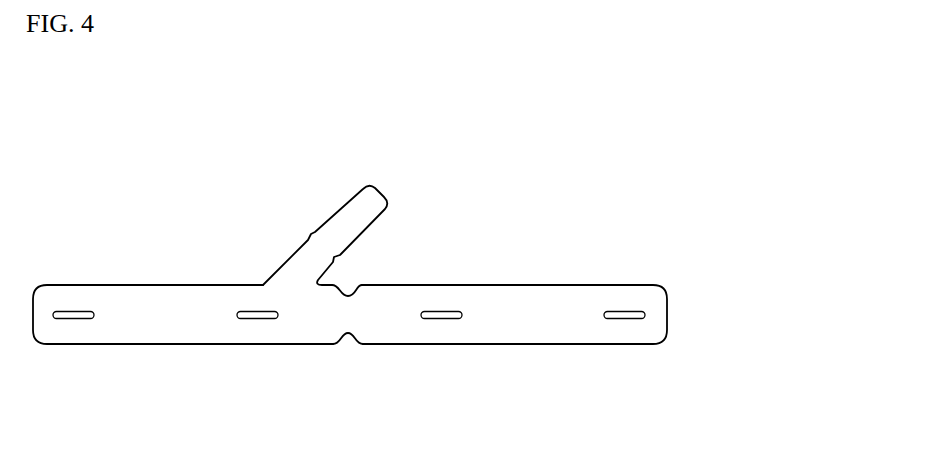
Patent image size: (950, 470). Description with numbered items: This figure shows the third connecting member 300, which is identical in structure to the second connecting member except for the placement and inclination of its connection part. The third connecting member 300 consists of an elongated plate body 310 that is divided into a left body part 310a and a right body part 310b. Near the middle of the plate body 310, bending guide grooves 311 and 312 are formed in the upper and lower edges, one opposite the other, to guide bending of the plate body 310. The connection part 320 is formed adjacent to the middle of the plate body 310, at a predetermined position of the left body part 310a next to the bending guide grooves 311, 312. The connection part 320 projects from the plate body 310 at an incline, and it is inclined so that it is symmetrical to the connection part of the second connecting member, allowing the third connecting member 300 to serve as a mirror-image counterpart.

The third connecting member 300 is at (495, 191).
The plate body 310 is at (542, 293).
The left body part 310a is at (33, 350).
The right body part 310b is at (367, 350).
The bending guide groove 311 is at (350, 296).
The bending guide groove 312 is at (347, 336).
The connection part 320 is at (341, 221).